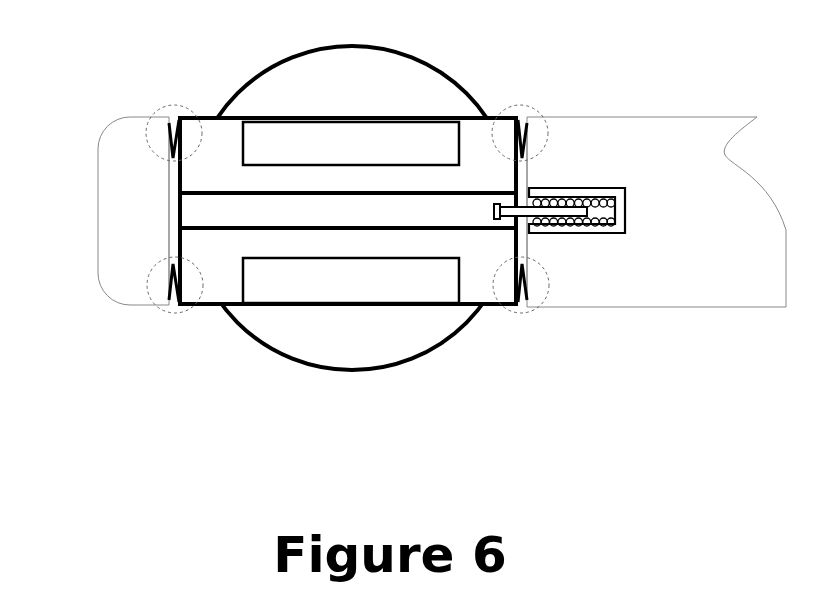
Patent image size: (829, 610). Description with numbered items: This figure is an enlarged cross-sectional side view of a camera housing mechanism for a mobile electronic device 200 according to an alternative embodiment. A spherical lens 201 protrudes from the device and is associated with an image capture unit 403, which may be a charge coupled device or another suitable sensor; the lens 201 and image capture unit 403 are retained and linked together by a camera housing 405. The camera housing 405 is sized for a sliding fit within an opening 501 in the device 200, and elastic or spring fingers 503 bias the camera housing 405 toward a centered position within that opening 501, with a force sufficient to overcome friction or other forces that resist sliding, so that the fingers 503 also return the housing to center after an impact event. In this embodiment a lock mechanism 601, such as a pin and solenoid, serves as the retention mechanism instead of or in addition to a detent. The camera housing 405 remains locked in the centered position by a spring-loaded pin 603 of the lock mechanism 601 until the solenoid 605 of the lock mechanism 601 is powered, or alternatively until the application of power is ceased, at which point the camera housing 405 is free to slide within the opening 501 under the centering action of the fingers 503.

The mobile electronic device 200 is at (128, 117).
The spherical lens 201 is at (328, 345).
The image capture unit 403 is at (328, 156).
The camera housing 405 is at (465, 191).
The opening 501 is at (175, 177).
The fingers 503 is at (170, 110).
The lock mechanism 601 is at (634, 166).
The spring-loaded pin 603 is at (587, 211).
The solenoid 605 is at (612, 185).